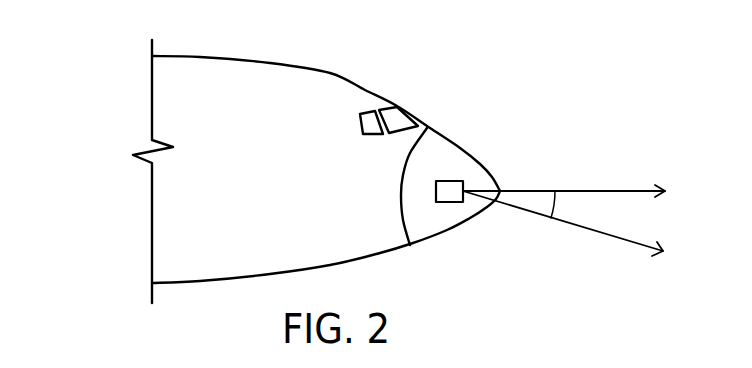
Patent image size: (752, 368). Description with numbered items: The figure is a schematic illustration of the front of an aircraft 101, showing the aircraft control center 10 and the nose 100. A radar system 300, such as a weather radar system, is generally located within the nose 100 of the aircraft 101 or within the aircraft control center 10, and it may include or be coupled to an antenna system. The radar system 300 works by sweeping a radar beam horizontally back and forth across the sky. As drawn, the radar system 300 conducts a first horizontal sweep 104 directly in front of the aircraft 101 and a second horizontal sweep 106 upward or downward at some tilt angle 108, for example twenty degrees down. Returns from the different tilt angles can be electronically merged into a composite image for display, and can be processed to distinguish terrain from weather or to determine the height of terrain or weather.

The aircraft control center 10 is at (362, 102).
The nose 100 is at (430, 145).
The aircraft 101 is at (489, 43).
The first horizontal sweep 104 is at (635, 190).
The second horizontal sweep 106 is at (603, 237).
The tilt angle 108 is at (560, 193).
The radar system 300 is at (447, 192).